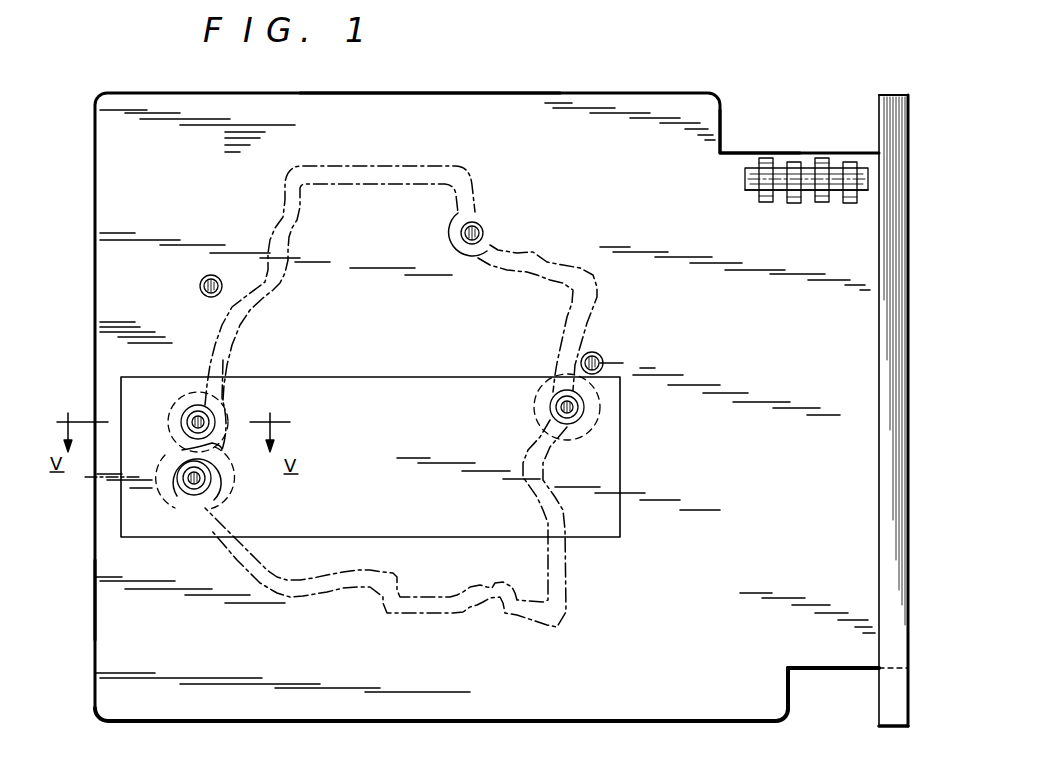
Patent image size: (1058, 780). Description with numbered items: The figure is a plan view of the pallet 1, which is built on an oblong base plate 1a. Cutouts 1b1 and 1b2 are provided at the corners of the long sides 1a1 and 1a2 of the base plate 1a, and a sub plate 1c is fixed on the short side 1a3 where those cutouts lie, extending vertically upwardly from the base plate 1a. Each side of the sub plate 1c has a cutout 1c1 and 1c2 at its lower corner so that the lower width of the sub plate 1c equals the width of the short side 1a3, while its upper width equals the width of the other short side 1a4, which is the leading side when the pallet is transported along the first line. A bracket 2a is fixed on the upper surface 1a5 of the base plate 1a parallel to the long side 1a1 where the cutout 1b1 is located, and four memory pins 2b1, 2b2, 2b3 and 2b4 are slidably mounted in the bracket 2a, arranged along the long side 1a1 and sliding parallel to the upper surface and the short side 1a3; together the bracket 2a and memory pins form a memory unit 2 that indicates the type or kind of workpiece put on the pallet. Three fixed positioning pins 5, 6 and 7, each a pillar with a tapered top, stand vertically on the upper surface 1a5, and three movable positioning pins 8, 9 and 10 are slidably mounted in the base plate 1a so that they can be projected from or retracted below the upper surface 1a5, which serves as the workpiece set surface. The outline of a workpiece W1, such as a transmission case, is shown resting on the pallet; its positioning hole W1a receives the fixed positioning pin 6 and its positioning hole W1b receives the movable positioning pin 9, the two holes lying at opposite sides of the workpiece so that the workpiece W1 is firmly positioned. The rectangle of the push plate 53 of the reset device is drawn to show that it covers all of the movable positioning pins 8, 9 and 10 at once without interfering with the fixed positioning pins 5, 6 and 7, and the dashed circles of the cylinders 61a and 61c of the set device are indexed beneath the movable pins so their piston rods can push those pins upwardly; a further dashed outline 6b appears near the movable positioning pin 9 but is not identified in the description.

The pallet 1 is at (626, 92).
The base plate 1a is at (463, 722).
The long side 1a1 is at (441, 93).
The long side 1a2 is at (380, 722).
The short side 1a3 is at (908, 408).
The short side 1a4 is at (95, 598).
The upper surface 1a5 is at (305, 705).
The cutout 1b1 is at (740, 133).
The cutout 1b2 is at (808, 693).
The sub plate 1c is at (908, 325).
The cutout 1c1 is at (905, 146).
The cutout 1c2 is at (895, 708).
The memory unit 2 is at (815, 152).
The bracket 2a is at (868, 177).
The memory pin 2b1 is at (846, 204).
The memory pin 2b2 is at (835, 158).
The memory pin 2b3 is at (796, 204).
The memory pin 2b4 is at (766, 158).
The fixed positioning pin 5 is at (200, 285).
The fixed positioning pin 6 is at (483, 229).
The fixed positioning pin 7 is at (603, 357).
The movable positioning pin 8 is at (195, 422).
The movable positioning pin 9 is at (192, 478).
The movable positioning pin 10 is at (573, 427).
The push plate 53 is at (622, 468).
The cylinder 61a is at (254, 398).
The cylinder 61c is at (532, 400).
The wire fixing region 6b is at (238, 512).
The workpiece W1 is at (354, 164).
The positioning hole W1a is at (488, 239).
The positioning hole W1b is at (203, 482).